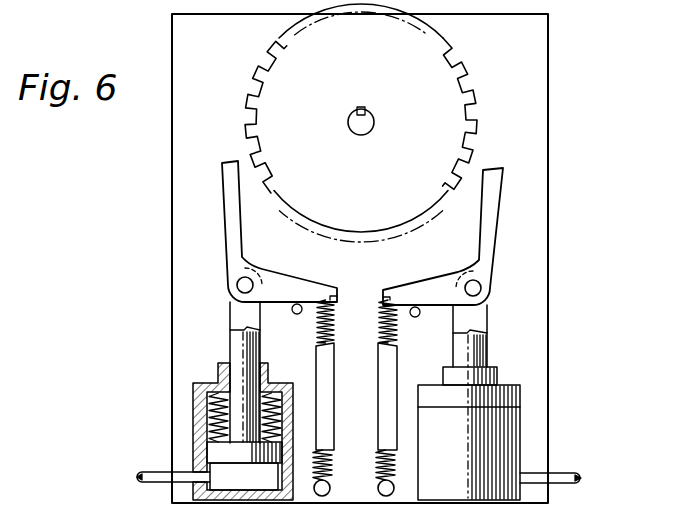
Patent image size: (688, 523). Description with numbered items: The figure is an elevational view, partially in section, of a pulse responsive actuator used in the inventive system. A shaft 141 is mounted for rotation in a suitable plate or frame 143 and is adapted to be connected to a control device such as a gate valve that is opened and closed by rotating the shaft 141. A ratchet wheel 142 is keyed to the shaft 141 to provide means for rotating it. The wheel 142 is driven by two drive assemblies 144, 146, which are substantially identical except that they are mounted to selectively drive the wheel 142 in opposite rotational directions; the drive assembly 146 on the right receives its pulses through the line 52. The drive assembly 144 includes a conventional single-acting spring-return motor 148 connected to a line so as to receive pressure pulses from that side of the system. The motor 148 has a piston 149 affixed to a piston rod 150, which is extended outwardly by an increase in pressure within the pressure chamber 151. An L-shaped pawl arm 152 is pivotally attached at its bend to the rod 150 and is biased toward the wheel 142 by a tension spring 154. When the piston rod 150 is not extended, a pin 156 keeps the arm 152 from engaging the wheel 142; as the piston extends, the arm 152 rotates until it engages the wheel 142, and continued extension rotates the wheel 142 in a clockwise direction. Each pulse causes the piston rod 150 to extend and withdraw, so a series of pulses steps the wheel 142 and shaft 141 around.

The line 52 is at (359, 461).
The shaft 141 is at (370, 132).
The ratchet wheel 142 is at (418, 67).
The frame 143 is at (535, 162).
The drive assembly 144 is at (210, 283).
The drive assembly 146 is at (507, 360).
The spring-return motor 148 is at (195, 383).
The piston 149 is at (217, 450).
The piston rod 150 is at (238, 318).
The pressure chamber 151 is at (232, 470).
The pawl arm 152 is at (235, 231).
The tension spring 154 is at (341, 333).
The pin 156 is at (298, 303).